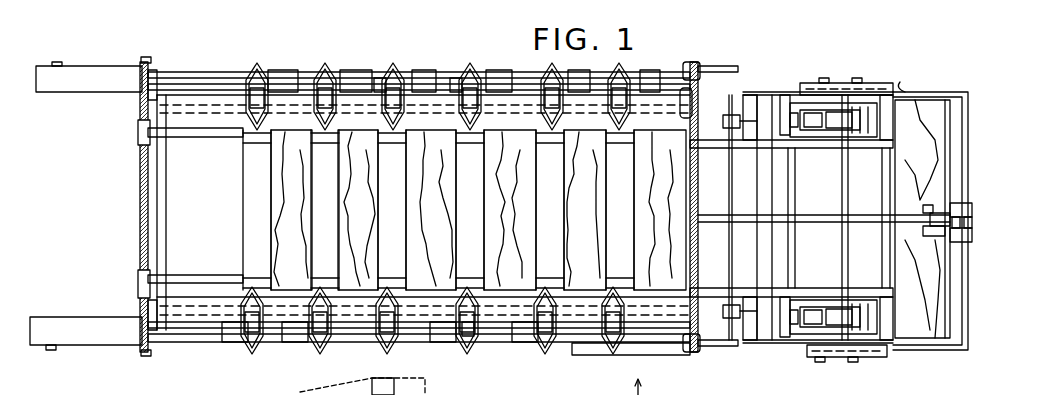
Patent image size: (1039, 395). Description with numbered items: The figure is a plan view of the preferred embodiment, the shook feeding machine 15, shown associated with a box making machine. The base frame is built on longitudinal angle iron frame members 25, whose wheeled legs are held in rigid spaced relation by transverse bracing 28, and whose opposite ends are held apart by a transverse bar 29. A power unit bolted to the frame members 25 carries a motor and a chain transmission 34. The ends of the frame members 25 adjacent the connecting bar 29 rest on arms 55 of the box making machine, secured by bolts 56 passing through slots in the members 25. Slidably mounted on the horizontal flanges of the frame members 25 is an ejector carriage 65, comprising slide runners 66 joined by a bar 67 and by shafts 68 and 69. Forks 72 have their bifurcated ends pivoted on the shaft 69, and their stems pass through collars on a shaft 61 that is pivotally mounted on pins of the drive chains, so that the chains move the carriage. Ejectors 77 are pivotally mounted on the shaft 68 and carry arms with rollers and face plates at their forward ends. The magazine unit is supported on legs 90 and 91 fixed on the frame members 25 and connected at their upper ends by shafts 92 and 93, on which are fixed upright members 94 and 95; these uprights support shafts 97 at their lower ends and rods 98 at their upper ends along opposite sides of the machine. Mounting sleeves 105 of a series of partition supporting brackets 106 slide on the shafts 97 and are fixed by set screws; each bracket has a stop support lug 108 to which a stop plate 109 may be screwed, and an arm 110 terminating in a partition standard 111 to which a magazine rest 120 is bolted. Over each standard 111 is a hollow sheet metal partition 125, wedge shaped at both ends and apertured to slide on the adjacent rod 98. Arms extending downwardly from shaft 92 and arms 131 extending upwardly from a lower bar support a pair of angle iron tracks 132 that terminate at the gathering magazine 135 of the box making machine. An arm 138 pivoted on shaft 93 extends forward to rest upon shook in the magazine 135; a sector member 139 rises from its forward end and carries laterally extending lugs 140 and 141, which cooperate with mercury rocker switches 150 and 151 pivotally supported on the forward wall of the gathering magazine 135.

The machine 15 is at (431, 54).
The longitudinal angle iron frame members 25 is at (97, 80).
The transverse bracing 28 is at (166, 210).
The transverse bar 29 is at (882, 238).
The chain transmission 34 is at (605, 355).
The arms 55 is at (905, 90).
The bolts 56 is at (826, 78).
The shaft 61 is at (729, 255).
The ejector carriage 65 is at (768, 90).
The slide runners 66 is at (790, 92).
The bar 67 is at (757, 188).
The shaft 68 is at (795, 240).
The shaft 69 is at (842, 260).
The forks 72 is at (740, 305).
The ejectors 77 is at (862, 104).
The legs 90 is at (141, 60).
The legs 91 is at (700, 66).
The shaft 92 is at (140, 226).
The shaft 93 is at (698, 160).
The upright members 94 is at (156, 75).
The upright members 95 is at (688, 62).
The shafts 97 is at (200, 72).
The rods 98 is at (205, 90).
The mounting sleeves 105 is at (598, 72).
The partition supporting brackets 106 is at (380, 70).
The stop support lug 108 is at (533, 72).
The stop plate 109 is at (368, 96).
The arm 110 is at (330, 70).
The partition standard 111 is at (247, 112).
The magazine rest 120 is at (522, 113).
The partitions 125 is at (262, 68).
The arms 131 is at (893, 145).
The angle iron tracks 132 is at (200, 137).
The gathering magazine 135 is at (962, 160).
The arm 138 is at (828, 215).
The sector member 139 is at (972, 222).
The lug 140 is at (932, 238).
The lug 141 is at (930, 200).
The mercury rocker switch 150 is at (972, 237).
The mercury rocker switch 151 is at (972, 207).